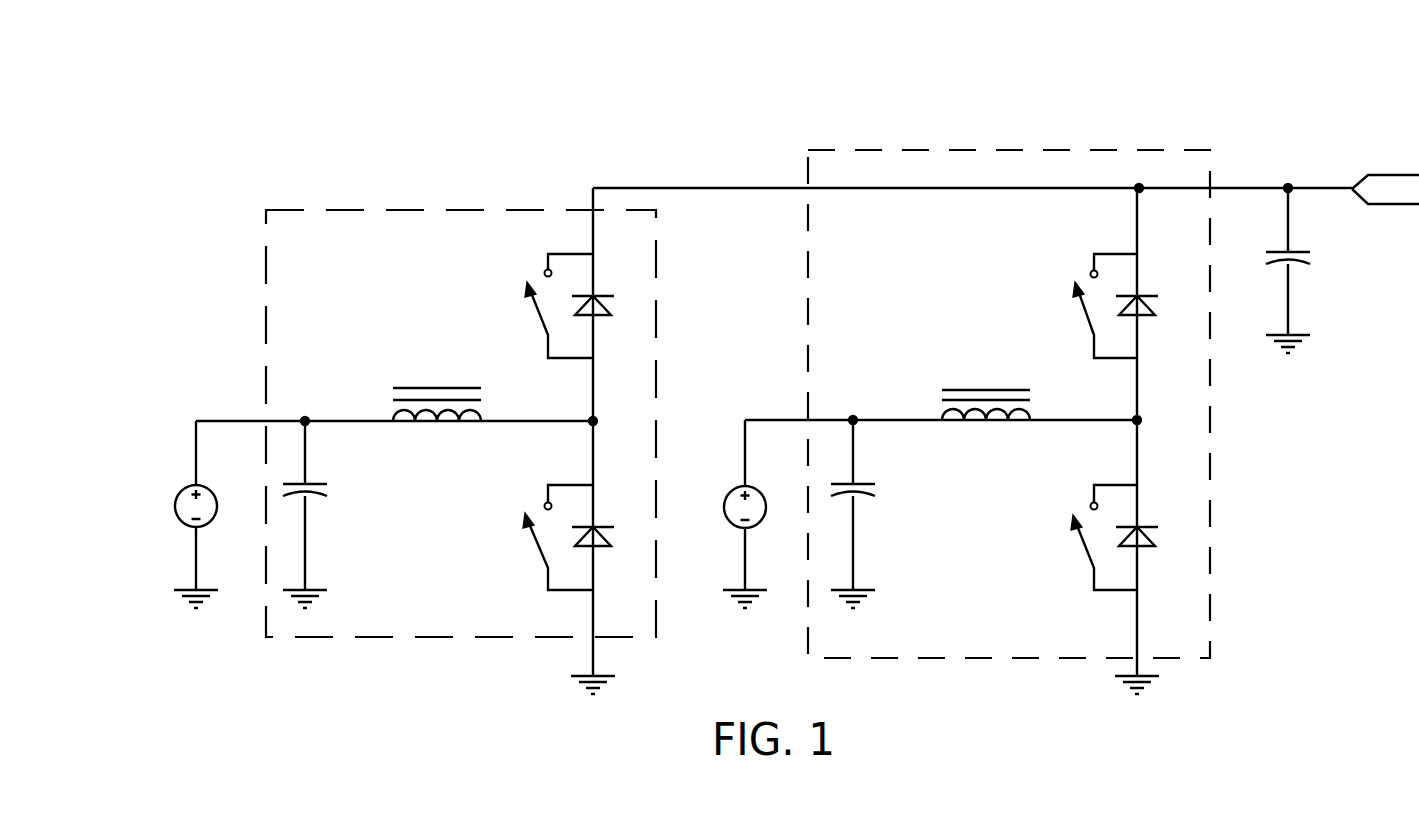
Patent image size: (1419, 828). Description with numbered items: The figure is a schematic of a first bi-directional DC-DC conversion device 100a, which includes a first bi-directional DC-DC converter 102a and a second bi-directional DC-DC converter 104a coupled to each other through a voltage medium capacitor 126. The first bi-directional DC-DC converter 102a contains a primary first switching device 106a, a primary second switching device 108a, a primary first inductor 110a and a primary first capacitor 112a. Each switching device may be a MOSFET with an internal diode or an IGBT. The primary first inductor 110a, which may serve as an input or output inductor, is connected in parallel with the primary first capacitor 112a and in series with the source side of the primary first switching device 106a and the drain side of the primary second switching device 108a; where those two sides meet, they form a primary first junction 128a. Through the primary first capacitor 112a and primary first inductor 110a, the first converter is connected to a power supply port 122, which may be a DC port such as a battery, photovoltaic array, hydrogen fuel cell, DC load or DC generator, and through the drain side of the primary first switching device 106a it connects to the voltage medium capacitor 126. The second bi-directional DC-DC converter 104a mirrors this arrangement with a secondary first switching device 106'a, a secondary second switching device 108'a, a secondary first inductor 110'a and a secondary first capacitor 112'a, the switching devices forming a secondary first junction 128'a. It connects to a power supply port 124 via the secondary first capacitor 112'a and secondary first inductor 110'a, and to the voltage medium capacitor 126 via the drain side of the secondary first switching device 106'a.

The first bi-directional DC-DC conversion device 100a is at (450, 73).
The first bi-directional DC-DC converter 102a is at (403, 209).
The second bi-directional DC-DC converter 104a is at (985, 150).
The primary first switching device 106a is at (523, 292).
The primary second switching device 108a is at (523, 535).
The primary first inductor 110a is at (430, 430).
The primary first capacitor 112a is at (333, 490).
The primary first junction 128a is at (597, 418).
The secondary first switching device 106'a is at (1065, 306).
The secondary second switching device 108'a is at (1057, 537).
The secondary first inductor 110'a is at (939, 375).
The secondary first capacitor 112'a is at (890, 514).
The secondary first junction 128'a is at (1165, 397).
The power supply port 122 is at (178, 522).
The power supply port 124 is at (728, 520).
The voltage medium capacitor 126 is at (1318, 260).